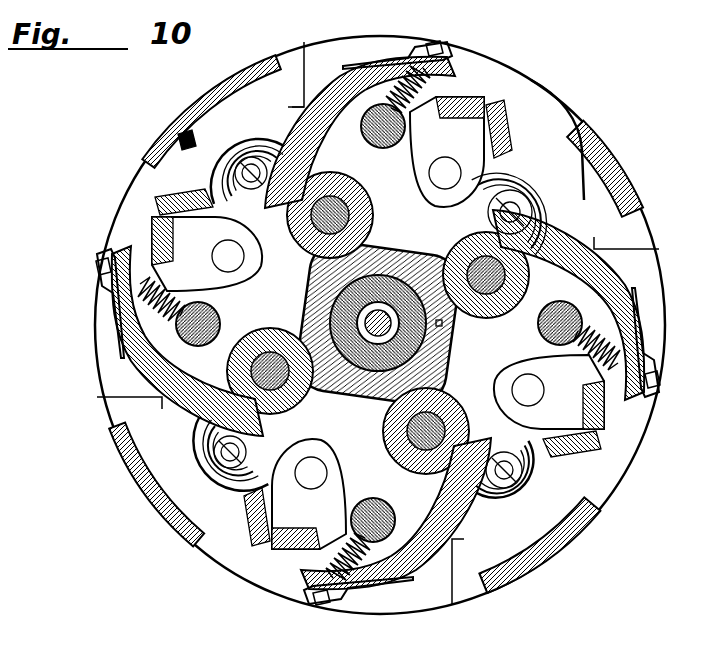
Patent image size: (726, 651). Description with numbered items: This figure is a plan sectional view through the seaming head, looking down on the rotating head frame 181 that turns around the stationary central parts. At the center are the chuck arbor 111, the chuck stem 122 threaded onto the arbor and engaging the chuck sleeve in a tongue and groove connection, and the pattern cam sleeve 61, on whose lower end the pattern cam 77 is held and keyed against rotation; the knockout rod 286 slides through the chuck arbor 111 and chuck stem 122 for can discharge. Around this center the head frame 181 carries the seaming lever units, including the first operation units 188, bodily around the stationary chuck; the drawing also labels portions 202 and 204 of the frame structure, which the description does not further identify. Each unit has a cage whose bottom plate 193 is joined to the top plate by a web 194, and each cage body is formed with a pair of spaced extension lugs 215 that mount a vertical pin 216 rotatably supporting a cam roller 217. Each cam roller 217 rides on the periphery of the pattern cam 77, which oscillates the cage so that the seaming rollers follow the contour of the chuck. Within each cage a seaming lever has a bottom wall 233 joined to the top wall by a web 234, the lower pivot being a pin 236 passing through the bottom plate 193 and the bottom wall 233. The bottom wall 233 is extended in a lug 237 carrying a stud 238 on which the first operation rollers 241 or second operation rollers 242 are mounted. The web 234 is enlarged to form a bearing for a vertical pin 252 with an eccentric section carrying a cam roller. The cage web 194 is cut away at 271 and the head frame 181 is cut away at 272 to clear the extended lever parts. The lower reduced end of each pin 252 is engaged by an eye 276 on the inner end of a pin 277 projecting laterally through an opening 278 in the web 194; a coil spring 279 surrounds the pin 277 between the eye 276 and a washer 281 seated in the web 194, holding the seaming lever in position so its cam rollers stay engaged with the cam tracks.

The pattern cam sleeve 61 is at (398, 226).
The pattern cam 77 is at (296, 294).
The chuck arbor 111 is at (400, 286).
The chuck stem 122 is at (385, 290).
The head frame 181 is at (242, 82).
The first operation unit 188 is at (494, 62).
The bottom plate 193 is at (378, 323).
The web 194 is at (270, 606).
The housing pocket 202 is at (404, 321).
The pocket wall 204 is at (302, 52).
The extension lugs 215 is at (280, 205).
The pin 216 is at (290, 250).
The cam roller 217 is at (360, 196).
The bottom wall 233 is at (378, 323).
The web 234 is at (252, 540).
The pin 236 is at (378, 323).
The lug 237 is at (226, 176).
The stud 238 is at (370, 321).
The first operation rollers 241 is at (192, 435).
The second operation rollers 242 is at (212, 172).
The pin 252 is at (373, 145).
The cut away 271 is at (384, 62).
The cut away 272 is at (178, 140).
The eye 276 is at (566, 306).
The pin 277 is at (446, 47).
The opening 278 is at (110, 283).
The coil spring 279 is at (393, 90).
The washer 281 is at (113, 292).
The knockout rod 286 is at (368, 412).